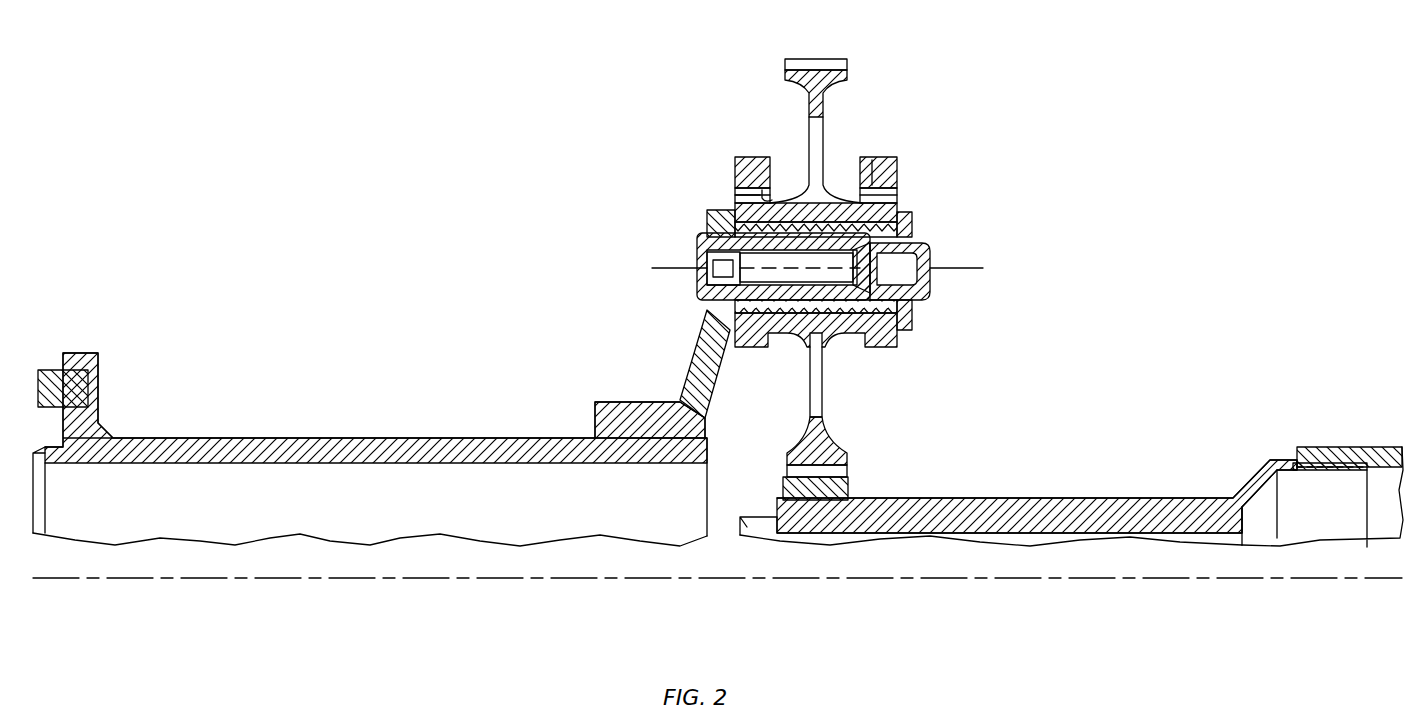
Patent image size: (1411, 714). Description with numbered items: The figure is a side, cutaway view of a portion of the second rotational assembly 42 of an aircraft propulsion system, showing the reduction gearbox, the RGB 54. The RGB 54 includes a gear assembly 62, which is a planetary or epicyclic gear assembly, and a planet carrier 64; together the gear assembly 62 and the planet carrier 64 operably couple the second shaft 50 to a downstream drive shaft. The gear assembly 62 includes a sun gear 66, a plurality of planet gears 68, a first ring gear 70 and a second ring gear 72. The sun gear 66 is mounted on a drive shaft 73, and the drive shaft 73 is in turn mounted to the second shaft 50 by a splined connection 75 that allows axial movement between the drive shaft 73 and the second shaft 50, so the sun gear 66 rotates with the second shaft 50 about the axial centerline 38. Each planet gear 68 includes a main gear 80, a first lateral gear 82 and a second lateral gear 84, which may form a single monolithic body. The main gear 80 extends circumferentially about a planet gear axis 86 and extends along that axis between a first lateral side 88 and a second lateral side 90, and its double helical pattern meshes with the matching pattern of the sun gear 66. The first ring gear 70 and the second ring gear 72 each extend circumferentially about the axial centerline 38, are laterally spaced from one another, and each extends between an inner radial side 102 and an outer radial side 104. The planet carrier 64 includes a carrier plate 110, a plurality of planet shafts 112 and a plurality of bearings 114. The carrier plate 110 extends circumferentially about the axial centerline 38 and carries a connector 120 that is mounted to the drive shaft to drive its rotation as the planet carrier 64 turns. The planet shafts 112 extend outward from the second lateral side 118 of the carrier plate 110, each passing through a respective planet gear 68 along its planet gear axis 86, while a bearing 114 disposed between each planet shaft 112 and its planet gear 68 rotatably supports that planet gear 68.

The axial centerline 38 is at (1291, 578).
The second rotational assembly 42 is at (1100, 80).
The second shaft 50 is at (1373, 447).
The RGB 54 is at (970, 215).
The gear assembly 62 is at (920, 152).
The planet carrier 64 is at (675, 330).
The sun gear 66 is at (850, 490).
The planet gears 68 is at (893, 363).
The first ring gear 70 is at (742, 157).
The second ring gear 72 is at (890, 157).
The drive shaft 73 is at (1125, 498).
The splined connection 75 is at (1317, 463).
The main gear 80 is at (822, 100).
The first lateral gear 82 is at (735, 195).
The second lateral gear 84 is at (898, 193).
The planet gear axis 86 is at (973, 270).
The first lateral side 88 is at (710, 160).
The second lateral side 90 is at (933, 172).
The inner radial side 102 is at (783, 196).
The outer radial side 104 is at (876, 157).
The carrier plate 110 is at (707, 220).
The planet shafts 112 is at (795, 275).
The bearings 114 is at (912, 225).
The second lateral side 118 is at (728, 360).
The connector 120 is at (622, 410).